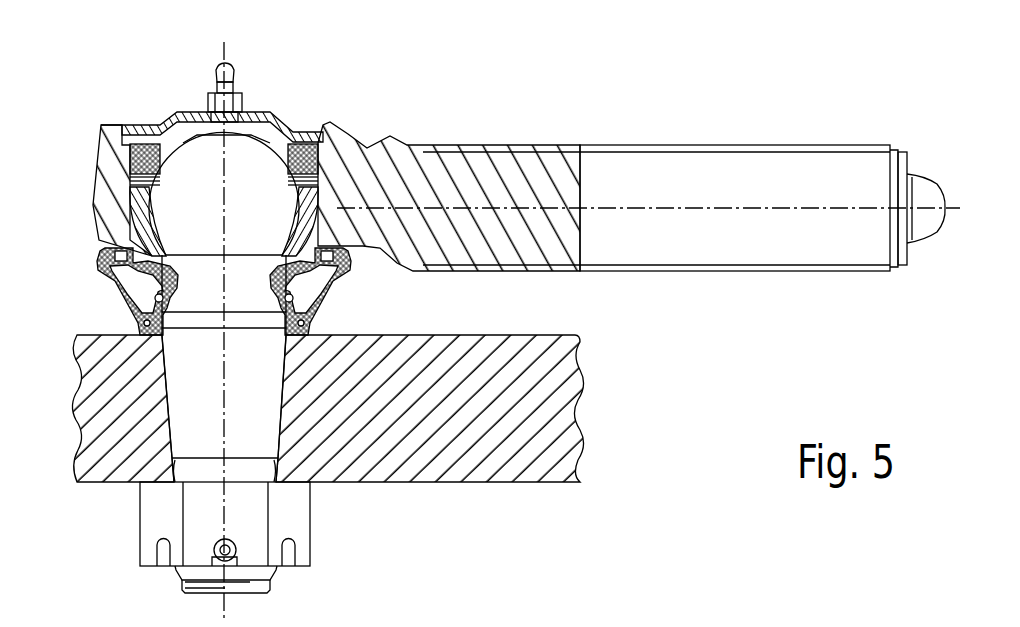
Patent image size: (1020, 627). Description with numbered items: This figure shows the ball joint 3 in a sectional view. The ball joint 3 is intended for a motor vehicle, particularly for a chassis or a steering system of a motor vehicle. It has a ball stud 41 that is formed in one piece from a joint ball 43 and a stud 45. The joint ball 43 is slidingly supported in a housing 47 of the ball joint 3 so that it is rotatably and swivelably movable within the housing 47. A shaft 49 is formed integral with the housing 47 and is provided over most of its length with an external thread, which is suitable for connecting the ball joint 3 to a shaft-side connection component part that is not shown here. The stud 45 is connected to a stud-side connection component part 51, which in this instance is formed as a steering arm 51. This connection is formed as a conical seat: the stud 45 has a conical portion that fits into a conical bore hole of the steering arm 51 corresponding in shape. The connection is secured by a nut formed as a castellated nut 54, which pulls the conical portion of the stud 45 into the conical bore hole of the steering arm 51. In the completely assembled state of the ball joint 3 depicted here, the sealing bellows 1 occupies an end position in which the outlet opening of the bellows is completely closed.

The sealing bellows 1 is at (358, 289).
The ball joint 3 is at (402, 103).
The ball stud 41 is at (295, 584).
The joint ball 43 is at (261, 160).
The stud 45 is at (260, 425).
The housing 47 is at (87, 184).
The shaft 49 is at (733, 128).
The steering arm 51 is at (543, 363).
The castellated nut 54 is at (150, 508).